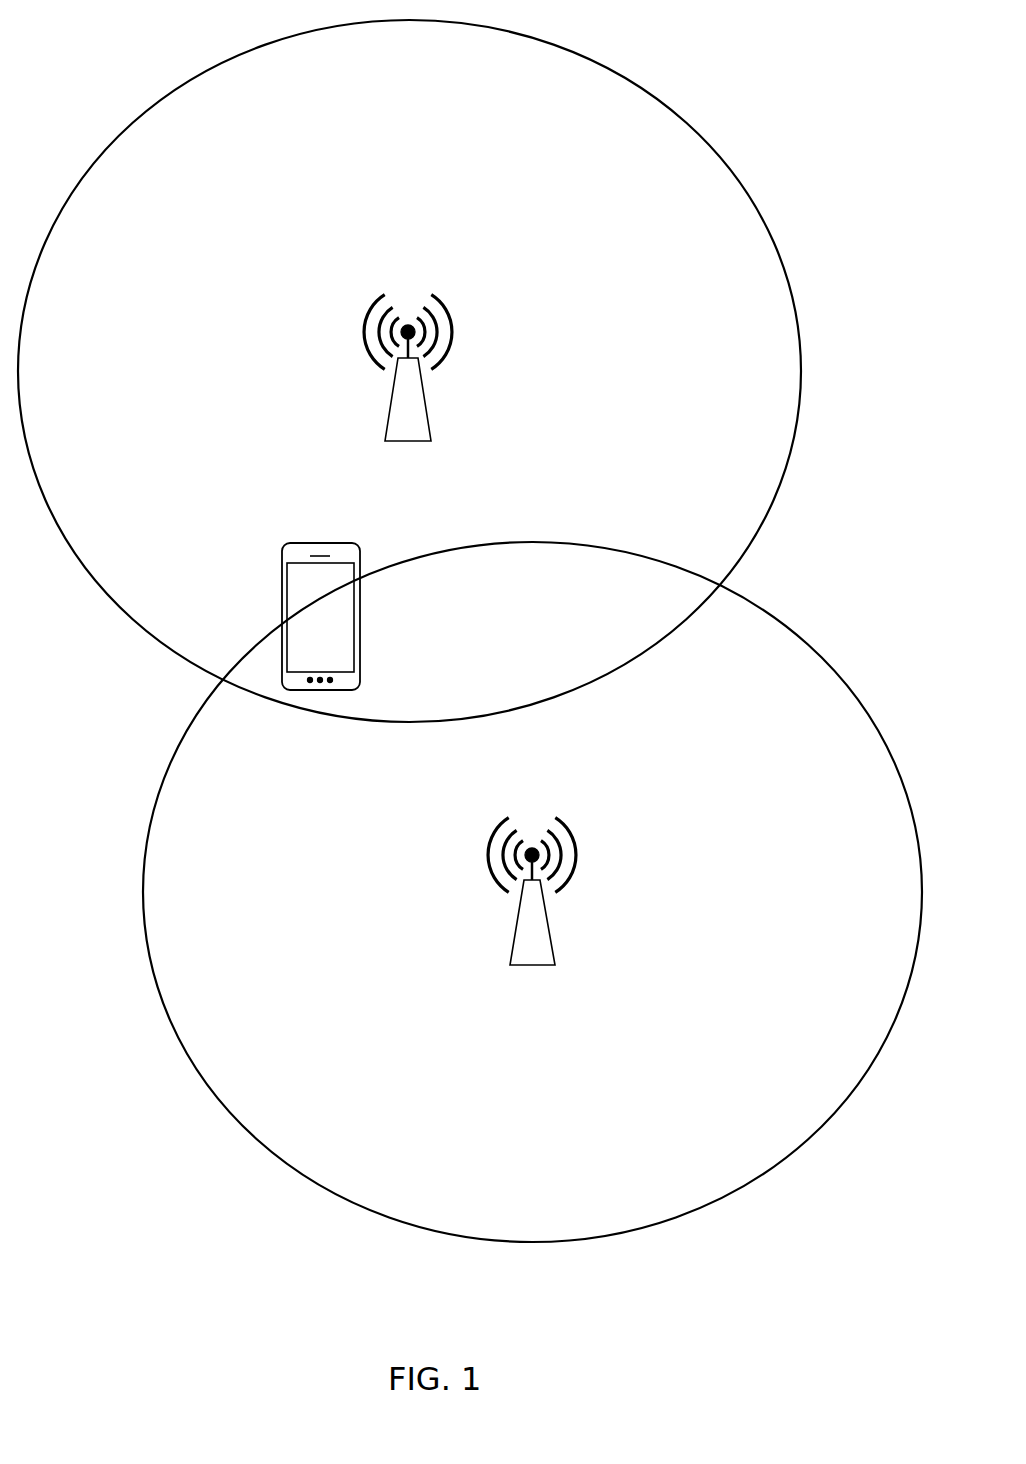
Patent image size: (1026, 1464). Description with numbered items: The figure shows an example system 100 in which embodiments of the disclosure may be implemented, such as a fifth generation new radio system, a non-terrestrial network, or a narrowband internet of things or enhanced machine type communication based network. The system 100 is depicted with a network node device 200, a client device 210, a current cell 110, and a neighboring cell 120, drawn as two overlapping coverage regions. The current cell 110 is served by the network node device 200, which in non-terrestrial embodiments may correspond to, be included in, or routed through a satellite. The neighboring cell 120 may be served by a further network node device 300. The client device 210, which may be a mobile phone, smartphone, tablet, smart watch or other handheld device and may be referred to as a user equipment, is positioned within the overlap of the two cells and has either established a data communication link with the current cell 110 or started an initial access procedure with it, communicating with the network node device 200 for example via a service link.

The system 100 is at (470, 671).
The current cell 110 is at (793, 430).
The neighboring cell 120 is at (143, 908).
The network node device 200 is at (420, 393).
The client device 210 is at (283, 568).
The network node device 300 is at (585, 918).